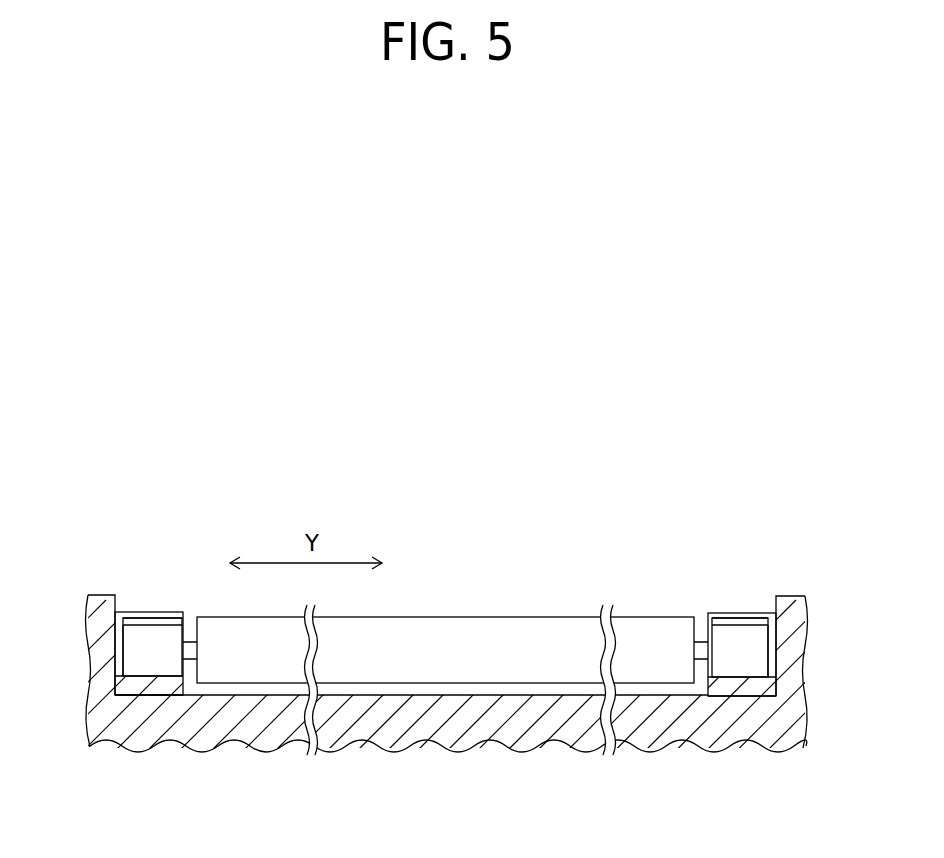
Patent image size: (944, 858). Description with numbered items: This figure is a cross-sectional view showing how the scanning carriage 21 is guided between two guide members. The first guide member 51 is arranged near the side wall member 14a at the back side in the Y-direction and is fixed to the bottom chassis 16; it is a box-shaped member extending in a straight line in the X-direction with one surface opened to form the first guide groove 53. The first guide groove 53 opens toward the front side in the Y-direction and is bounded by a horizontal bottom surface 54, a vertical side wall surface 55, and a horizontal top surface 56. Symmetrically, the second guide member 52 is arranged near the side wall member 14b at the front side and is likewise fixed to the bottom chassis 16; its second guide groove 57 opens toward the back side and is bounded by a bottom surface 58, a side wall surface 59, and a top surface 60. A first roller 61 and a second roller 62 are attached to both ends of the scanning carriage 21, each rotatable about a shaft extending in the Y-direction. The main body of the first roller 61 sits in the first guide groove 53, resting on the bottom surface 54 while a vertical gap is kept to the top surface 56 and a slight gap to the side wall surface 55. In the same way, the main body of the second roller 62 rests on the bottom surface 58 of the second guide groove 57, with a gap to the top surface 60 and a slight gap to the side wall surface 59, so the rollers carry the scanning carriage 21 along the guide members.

The side wall member 14a is at (103, 608).
The side wall member 14b is at (783, 605).
The bottom chassis 16 is at (443, 686).
The scanning carriage 21 is at (464, 579).
The first guide member 51 is at (161, 639).
The second guide member 52 is at (754, 650).
The first guide groove 53 is at (174, 633).
The bottom surface 54 is at (158, 684).
The side wall surface 55 is at (122, 660).
The top surface 56 is at (153, 627).
The second guide groove 57 is at (716, 637).
The bottom surface 58 is at (738, 685).
The side wall surface 59 is at (763, 673).
The top surface 60 is at (748, 626).
The first roller 61 is at (150, 647).
The second roller 62 is at (738, 648).